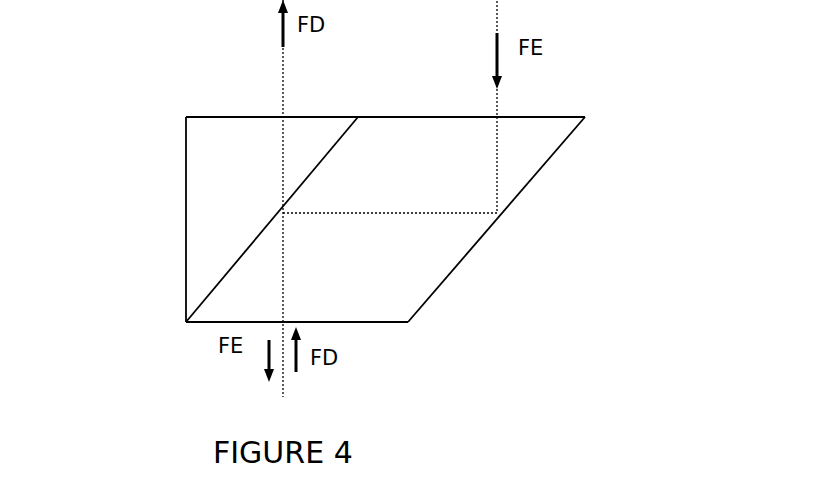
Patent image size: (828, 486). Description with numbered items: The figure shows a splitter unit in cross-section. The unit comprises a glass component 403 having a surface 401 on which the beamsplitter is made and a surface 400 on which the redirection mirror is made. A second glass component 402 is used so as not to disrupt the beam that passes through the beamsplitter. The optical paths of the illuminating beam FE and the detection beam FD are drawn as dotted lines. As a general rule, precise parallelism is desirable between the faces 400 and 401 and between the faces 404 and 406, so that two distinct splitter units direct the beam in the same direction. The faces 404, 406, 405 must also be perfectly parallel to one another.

The surface 400 is at (555, 185).
The surface 401 is at (198, 285).
The second glass component 402 is at (311, 124).
The glass component 403 is at (428, 285).
The face 404 is at (353, 340).
The face 405 is at (570, 108).
The face 406 is at (207, 101).